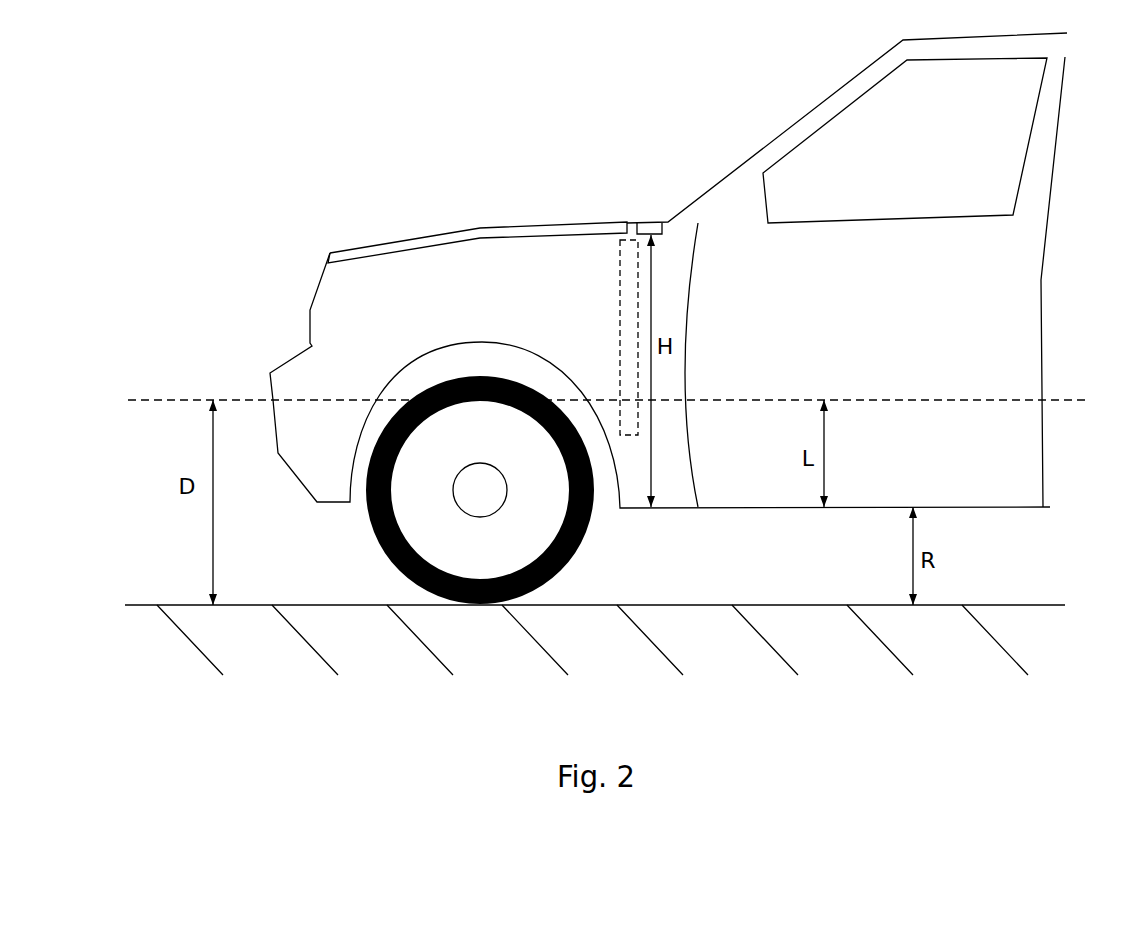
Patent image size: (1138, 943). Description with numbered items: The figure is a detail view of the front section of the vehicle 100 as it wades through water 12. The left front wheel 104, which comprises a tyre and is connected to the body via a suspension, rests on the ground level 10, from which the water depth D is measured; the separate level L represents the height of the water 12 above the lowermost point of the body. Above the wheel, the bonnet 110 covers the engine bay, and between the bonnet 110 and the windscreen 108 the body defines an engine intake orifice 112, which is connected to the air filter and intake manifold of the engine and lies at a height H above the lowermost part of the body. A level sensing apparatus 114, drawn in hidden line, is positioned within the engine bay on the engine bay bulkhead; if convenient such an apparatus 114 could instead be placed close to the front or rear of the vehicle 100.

The vehicle 100 is at (451, 116).
The ground level 10 is at (233, 605).
The water 12 is at (150, 398).
The left front wheel 104 is at (495, 545).
The windscreen 108 is at (793, 125).
The bonnet 110 is at (440, 233).
The engine intake orifice 112 is at (648, 220).
The level sensing apparatus 114 is at (632, 363).